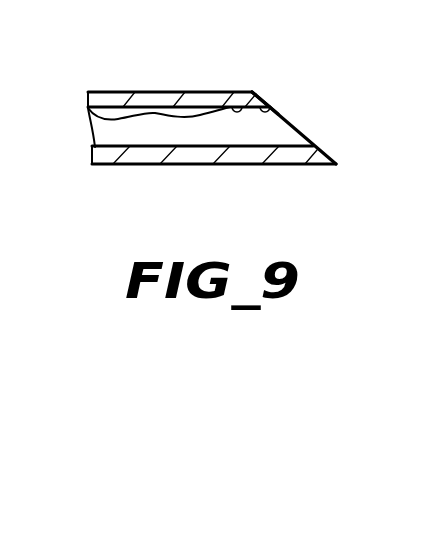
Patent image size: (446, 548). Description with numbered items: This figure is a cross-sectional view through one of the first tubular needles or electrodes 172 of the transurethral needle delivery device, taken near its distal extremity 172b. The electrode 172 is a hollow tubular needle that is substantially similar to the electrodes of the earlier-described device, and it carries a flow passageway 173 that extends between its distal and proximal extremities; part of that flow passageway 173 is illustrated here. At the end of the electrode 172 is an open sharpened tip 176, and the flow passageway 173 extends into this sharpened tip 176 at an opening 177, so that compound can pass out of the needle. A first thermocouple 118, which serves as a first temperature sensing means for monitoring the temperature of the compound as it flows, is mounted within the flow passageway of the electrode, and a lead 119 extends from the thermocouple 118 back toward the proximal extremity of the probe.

The first tubular needle or electrode 172 is at (212, 129).
The distal extremity 172b is at (161, 100).
The flow passageway 173 is at (161, 146).
The lead 119 is at (93, 128).
The first thermocouple 118 is at (235, 116).
The open sharpened tip 176 is at (312, 155).
The opening 177 is at (278, 106).